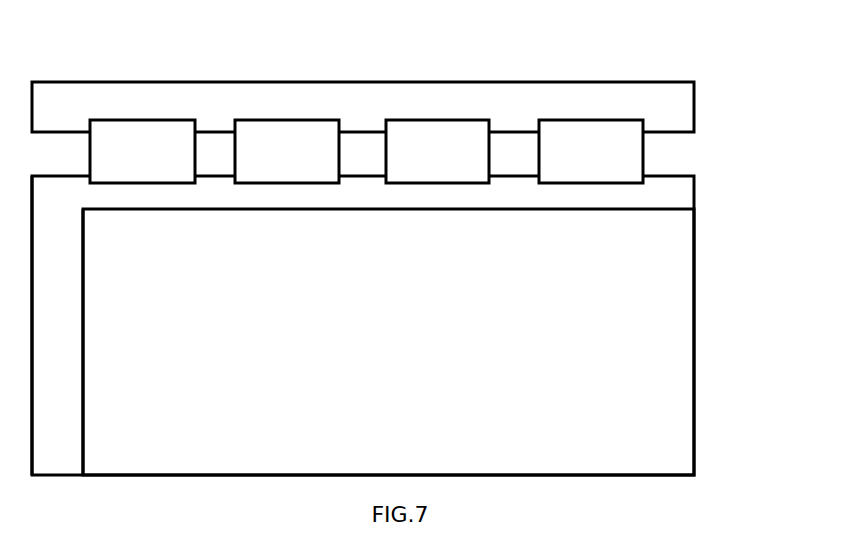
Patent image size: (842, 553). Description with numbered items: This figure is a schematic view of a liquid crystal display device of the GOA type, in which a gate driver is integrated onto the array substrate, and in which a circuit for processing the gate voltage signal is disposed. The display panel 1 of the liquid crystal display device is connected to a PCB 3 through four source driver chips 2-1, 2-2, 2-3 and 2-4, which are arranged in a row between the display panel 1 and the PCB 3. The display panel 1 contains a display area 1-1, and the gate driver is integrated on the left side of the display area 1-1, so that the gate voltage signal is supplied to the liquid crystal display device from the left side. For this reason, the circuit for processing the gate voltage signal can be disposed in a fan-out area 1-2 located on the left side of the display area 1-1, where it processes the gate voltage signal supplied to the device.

The display panel 1 is at (694, 287).
The display area 1-1 is at (388, 342).
The fan-out area 1-2 is at (57, 325).
The source driver chip 2-1 is at (142, 151).
The source driver chip 2-2 is at (287, 151).
The source driver chip 2-3 is at (437, 151).
The source driver chip 2-4 is at (591, 151).
The PCB 3 is at (363, 107).